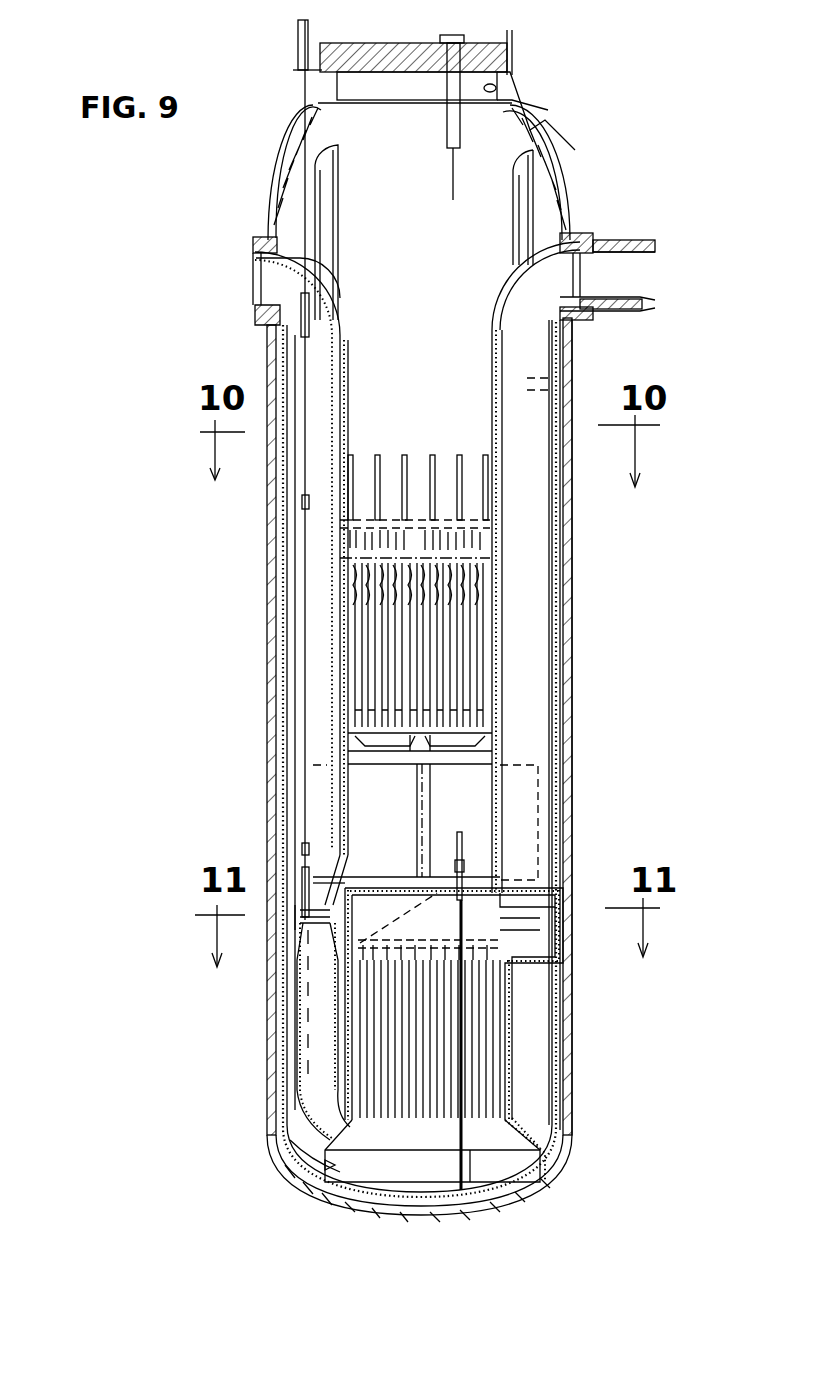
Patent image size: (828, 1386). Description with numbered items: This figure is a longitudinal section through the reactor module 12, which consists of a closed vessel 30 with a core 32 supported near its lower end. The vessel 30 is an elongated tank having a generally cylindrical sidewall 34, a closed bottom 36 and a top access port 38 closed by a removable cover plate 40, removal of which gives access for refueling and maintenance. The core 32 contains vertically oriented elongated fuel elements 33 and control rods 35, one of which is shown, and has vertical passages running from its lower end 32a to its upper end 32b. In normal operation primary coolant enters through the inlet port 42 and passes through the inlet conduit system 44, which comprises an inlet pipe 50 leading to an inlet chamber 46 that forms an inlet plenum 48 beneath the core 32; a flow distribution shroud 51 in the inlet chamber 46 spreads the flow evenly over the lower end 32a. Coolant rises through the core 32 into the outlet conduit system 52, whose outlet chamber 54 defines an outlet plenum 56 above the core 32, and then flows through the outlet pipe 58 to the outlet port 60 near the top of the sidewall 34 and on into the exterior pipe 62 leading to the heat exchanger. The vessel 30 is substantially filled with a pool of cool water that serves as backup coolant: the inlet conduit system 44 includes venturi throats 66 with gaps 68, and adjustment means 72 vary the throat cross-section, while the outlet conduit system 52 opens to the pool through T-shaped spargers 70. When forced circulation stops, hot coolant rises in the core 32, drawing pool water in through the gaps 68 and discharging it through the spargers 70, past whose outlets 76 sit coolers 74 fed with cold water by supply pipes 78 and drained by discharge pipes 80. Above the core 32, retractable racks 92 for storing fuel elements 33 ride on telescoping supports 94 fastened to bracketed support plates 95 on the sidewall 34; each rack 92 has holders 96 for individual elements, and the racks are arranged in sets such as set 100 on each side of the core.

The reactor module 12 is at (450, 663).
The vessel 30 is at (578, 727).
The core 32 is at (518, 1045).
The lower end of the core 32a is at (365, 1175).
The upper end of the core 32b is at (520, 935).
The fuel elements 33 is at (370, 645).
The sidewall 34 is at (576, 670).
The control rods 35 is at (500, 945).
The closed bottom 36 is at (545, 1165).
The top access port 38 is at (487, 87).
The cover plate 40 is at (398, 42).
The inlet port 42 is at (255, 272).
The inlet conduit system 44 is at (362, 349).
The inlet chamber 46 is at (325, 1165).
The inlet plenum 48 is at (494, 1170).
The inlet pipe 50 is at (340, 398).
The flow distribution shroud 51 is at (432, 1151).
The outlet conduit system 52 is at (588, 622).
The outlet chamber 54 is at (360, 895).
The outlet plenum 56 is at (373, 909).
The outlet pipe 58 is at (549, 553).
The outlet port 60 is at (583, 272).
The exterior pipe 62 is at (638, 245).
The venturi throats 66 is at (292, 920).
The gaps 68 is at (296, 934).
The spargers 70 is at (432, 792).
The adjustment means 72 is at (300, 807).
The coolers 74 is at (615, 836).
The outlets of the spargers 76 is at (350, 740).
The cooling water supply pipes 78 is at (335, 245).
The discharge pipes 80 is at (520, 215).
The retractable racks 92 is at (475, 552).
The telescoping supports 94 is at (480, 540).
The bracketed support plates 95 is at (415, 520).
The holders 96 is at (355, 612).
The set of racks 100 is at (438, 465).